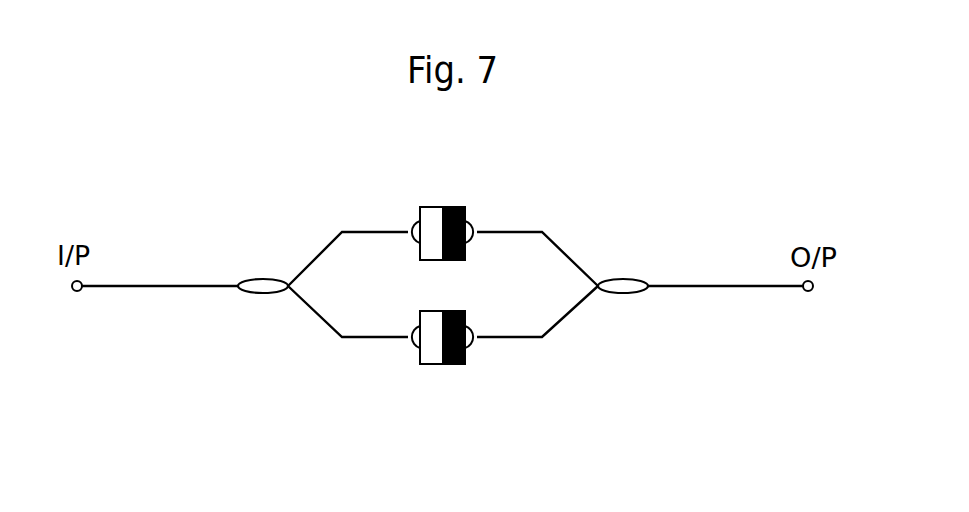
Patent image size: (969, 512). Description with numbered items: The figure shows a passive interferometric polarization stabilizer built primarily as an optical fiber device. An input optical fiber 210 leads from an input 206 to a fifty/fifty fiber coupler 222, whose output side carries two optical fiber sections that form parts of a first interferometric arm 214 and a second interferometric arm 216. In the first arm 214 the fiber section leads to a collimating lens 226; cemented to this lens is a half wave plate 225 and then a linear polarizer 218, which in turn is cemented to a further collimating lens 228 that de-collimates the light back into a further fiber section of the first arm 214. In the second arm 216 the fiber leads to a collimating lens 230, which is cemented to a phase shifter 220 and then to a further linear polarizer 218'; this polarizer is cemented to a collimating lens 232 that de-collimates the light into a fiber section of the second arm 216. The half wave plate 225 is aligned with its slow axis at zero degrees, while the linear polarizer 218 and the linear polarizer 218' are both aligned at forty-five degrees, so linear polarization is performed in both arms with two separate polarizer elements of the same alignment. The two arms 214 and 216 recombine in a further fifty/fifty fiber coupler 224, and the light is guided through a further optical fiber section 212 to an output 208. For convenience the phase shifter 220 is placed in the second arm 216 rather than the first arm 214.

The input 206 is at (77, 292).
The output 208 is at (808, 293).
The input optical fiber 210 is at (127, 288).
The optical fiber section 212 is at (727, 289).
The first interferometric arm 214 is at (303, 262).
The second interferometric arm 216 is at (322, 324).
The linear polarizer 218 is at (493, 198).
The linear polarizer 218' is at (515, 393).
The phase shifter 220 is at (428, 365).
The fiber coupler 222 is at (243, 293).
The fiber coupler 224 is at (622, 293).
The half wave plate 225 is at (435, 206).
The collimating lens 226 is at (410, 221).
The collimating lens 228 is at (478, 222).
The collimating lens 230 is at (411, 349).
The collimating lens 232 is at (476, 347).